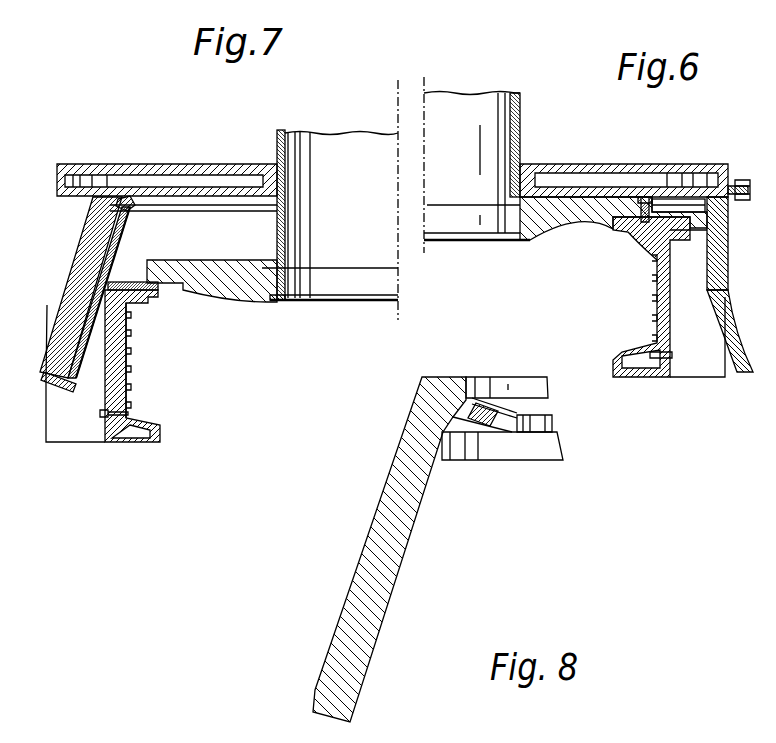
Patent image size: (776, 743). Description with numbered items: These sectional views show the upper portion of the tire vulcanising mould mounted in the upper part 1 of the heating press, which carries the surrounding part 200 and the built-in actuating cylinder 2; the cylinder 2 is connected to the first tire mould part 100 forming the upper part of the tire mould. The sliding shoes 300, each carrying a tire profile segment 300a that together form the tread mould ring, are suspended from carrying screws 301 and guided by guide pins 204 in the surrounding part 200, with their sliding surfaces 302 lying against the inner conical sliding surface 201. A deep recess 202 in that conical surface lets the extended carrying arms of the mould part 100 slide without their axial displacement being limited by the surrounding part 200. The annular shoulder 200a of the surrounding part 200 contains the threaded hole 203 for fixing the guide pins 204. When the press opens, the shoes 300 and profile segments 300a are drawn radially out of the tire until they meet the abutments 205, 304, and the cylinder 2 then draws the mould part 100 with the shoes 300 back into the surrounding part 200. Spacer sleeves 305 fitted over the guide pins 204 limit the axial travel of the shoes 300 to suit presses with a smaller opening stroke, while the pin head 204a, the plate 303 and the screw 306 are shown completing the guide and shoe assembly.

In FIG. 7, the upper part of the heating press 1 is at (248, 165).
In FIG. 6, the upper part of the heating press 1 is at (580, 168).
In FIG. 7, the actuating cylinder 2 is at (283, 136).
In FIG. 6, the actuating cylinder 2 is at (518, 99).
In FIG. 7, the first tire mould part 100 is at (247, 286).
In FIG. 6, the first tire mould part 100 is at (558, 226).
In FIG. 6, the surrounding part 200 is at (713, 311).
In FIG. 8, the surrounding part 200 is at (389, 549).
In FIG. 8, the annular shoulder 200a is at (508, 430).
In FIG. 6, the conical sliding surface 201 is at (741, 375).
In FIG. 8, the conical sliding surface 201 is at (401, 592).
In FIG. 6, the recess 202 is at (712, 236).
In FIG. 8, the recess 202 is at (452, 446).
In FIG. 8, the threaded hole 203 is at (488, 423).
In FIG. 7, the guide pin 204 is at (104, 315).
In FIG. 7, the bolt head 204a is at (130, 200).
In FIG. 7, the abutment 205 is at (80, 287).
In FIG. 7, the sliding shoe 300 is at (160, 440).
In FIG. 6, the sliding shoe 300 is at (620, 379).
In FIG. 7, the tire profile segment 300a is at (132, 390).
In FIG. 6, the tire profile segment 300a is at (652, 316).
In FIG. 6, the carrying screw 301 is at (645, 200).
In FIG. 7, the sliding surface 302 is at (55, 444).
In FIG. 6, the sliding surface 302 is at (690, 379).
In FIG. 7, the plate 303 is at (127, 325).
In FIG. 7, the abutment 304 is at (129, 358).
In FIG. 7, the spacer sleeve 305 is at (68, 397).
In FIG. 7, the screw 306 is at (128, 443).